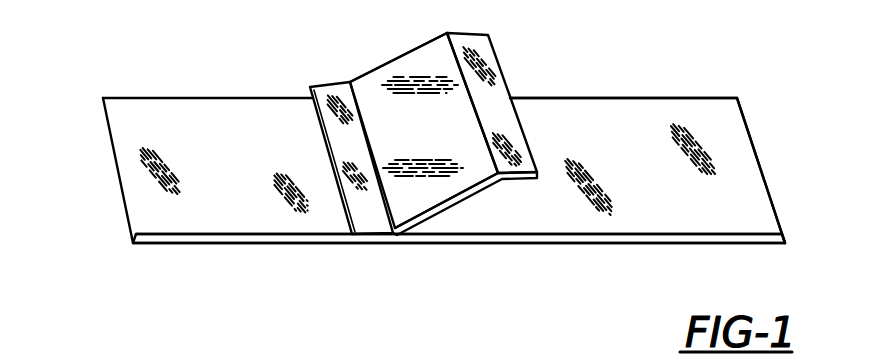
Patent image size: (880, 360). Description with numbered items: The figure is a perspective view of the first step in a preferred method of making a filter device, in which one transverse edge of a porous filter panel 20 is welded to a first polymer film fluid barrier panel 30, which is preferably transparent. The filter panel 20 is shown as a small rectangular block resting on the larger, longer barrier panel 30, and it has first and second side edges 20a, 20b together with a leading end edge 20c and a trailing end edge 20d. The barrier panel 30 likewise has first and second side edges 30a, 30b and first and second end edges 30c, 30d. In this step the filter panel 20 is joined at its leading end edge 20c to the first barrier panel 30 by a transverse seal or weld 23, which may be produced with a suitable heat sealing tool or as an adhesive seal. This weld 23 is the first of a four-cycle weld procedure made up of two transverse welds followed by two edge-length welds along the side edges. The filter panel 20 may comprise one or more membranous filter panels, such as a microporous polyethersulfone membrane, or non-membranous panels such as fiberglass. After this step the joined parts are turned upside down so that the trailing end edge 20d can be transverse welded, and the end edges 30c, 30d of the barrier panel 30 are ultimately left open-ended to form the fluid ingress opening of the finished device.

The porous filter panel 20 is at (390, 99).
The first side edge of filter panel 20a is at (455, 205).
The second side edge of filter panel 20b is at (430, 42).
The leading end edge of filter panel 20c is at (322, 163).
The trailing end edge of filter panel 20d is at (508, 86).
The transverse seal or weld 23 is at (377, 238).
The first polymer film fluid barrier panel 30 is at (762, 221).
The first side edge of first barrier panel 30a is at (580, 247).
The second side edge of first barrier panel 30b is at (655, 97).
The first end edge of first barrier panel 30c is at (119, 178).
The second end edge of first barrier panel 30d is at (759, 161).